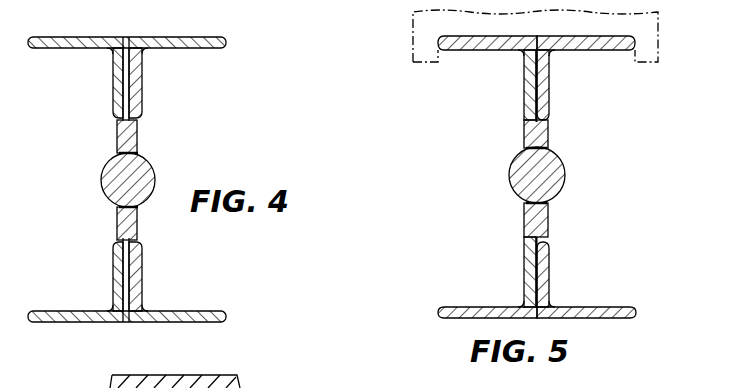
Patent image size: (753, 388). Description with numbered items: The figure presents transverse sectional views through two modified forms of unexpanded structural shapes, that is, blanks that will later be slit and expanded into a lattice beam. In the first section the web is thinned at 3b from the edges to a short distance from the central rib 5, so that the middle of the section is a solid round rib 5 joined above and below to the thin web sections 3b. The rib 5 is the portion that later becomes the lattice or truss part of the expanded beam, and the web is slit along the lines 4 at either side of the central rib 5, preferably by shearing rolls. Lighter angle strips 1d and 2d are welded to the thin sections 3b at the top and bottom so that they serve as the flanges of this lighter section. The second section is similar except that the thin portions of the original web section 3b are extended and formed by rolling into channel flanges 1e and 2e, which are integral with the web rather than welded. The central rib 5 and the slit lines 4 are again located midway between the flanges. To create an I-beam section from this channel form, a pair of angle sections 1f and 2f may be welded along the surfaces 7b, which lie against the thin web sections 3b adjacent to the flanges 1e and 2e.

In FIG. 4, the angle strip 1d is at (40, 50).
In FIG. 4, the angle strip 2d is at (80, 311).
In FIG. 4, the thin web section 3b is at (133, 95).
In FIG. 5, the thin web section 3b is at (524, 80).
In FIG. 4, the slit line 4 is at (137, 153).
In FIG. 5, the slit line 4 is at (530, 150).
In FIG. 4, the central rib 5 is at (110, 173).
In FIG. 5, the central rib 5 is at (558, 171).
In FIG. 5, the channel flange 1e is at (452, 52).
In FIG. 5, the angle section 1f is at (590, 52).
In FIG. 5, the channel flange 2e is at (480, 307).
In FIG. 5, the angle section 2f is at (606, 293).
In FIG. 5, the welding surface 7b is at (543, 100).